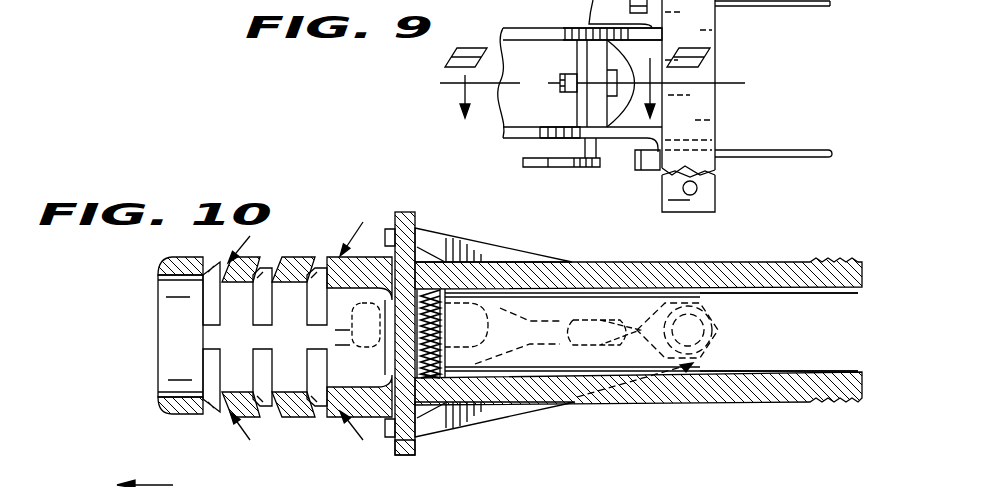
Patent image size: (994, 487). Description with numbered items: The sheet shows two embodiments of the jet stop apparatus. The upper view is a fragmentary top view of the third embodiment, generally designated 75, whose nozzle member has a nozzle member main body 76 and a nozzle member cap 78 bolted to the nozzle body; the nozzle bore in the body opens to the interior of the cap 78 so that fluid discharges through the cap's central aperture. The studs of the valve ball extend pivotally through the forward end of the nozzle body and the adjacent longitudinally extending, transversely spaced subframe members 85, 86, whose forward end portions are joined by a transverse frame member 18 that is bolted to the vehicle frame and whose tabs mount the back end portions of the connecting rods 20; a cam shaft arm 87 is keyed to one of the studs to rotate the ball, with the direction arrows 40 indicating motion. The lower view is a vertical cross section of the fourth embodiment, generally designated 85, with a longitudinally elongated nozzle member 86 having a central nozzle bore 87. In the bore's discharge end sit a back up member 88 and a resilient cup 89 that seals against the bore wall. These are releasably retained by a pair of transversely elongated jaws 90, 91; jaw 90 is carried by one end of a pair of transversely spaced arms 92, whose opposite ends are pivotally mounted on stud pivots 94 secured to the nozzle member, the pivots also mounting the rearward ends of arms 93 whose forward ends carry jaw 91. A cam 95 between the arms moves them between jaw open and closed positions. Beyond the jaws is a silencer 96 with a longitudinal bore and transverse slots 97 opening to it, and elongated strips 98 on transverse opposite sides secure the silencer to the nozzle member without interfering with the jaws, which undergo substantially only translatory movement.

In FIG. 9, the transverse frame member 18 is at (707, 198).
In FIG. 9, the connecting rods 20 is at (750, 6).
In FIG. 9, the direction of movement 40 is at (852, 105).
In FIG. 10, the direction of movement 40 is at (58, 328).
In FIG. 9, the jet stop apparatus 75 is at (719, 111).
In FIG. 9, the nozzle member main body 76 is at (542, 78).
In FIG. 9, the nozzle member cap 78 is at (577, 107).
In FIG. 9, the subframe member 85 is at (523, 37).
In FIG. 10, the subframe member 85 is at (718, 402).
In FIG. 9, the subframe member 86 is at (513, 134).
In FIG. 10, the subframe member 86 is at (760, 398).
In FIG. 9, the cam shaft arm 87 is at (562, 164).
In FIG. 10, the cam shaft arm 87 is at (847, 357).
In FIG. 10, the back up member 88 is at (437, 348).
In FIG. 10, the resilient cup 89 is at (433, 312).
In FIG. 10, the jaw 90 is at (405, 214).
In FIG. 10, the jaw 91 is at (405, 457).
In FIG. 10, the arms 92 is at (457, 242).
In FIG. 10, the arms 93 is at (472, 422).
In FIG. 10, the stud pivots 94 is at (712, 328).
In FIG. 10, the cam 95 is at (573, 345).
In FIG. 10, the silencer 96 is at (167, 390).
In FIG. 10, the transverse slots 97 is at (202, 306).
In FIG. 10, the elongated strip 98 is at (386, 316).